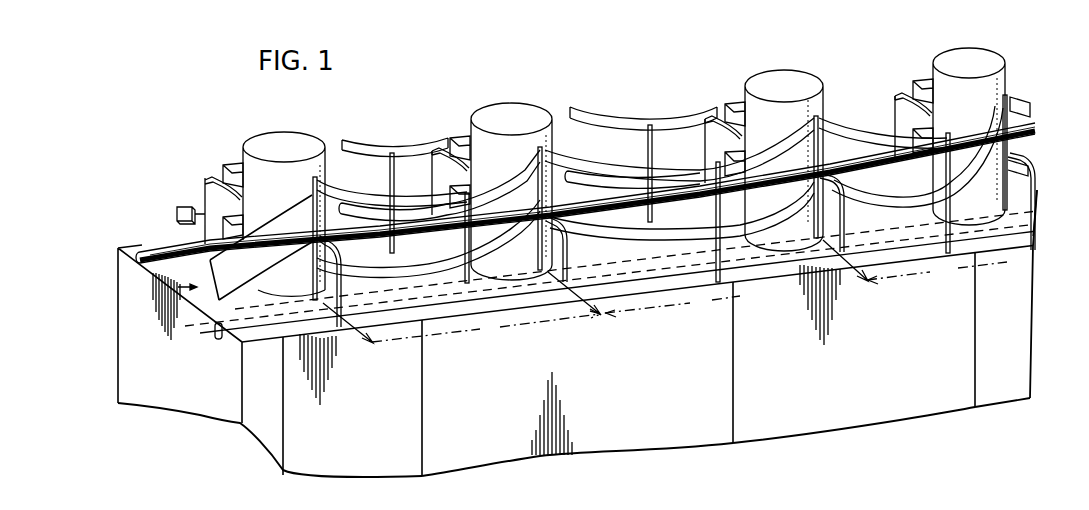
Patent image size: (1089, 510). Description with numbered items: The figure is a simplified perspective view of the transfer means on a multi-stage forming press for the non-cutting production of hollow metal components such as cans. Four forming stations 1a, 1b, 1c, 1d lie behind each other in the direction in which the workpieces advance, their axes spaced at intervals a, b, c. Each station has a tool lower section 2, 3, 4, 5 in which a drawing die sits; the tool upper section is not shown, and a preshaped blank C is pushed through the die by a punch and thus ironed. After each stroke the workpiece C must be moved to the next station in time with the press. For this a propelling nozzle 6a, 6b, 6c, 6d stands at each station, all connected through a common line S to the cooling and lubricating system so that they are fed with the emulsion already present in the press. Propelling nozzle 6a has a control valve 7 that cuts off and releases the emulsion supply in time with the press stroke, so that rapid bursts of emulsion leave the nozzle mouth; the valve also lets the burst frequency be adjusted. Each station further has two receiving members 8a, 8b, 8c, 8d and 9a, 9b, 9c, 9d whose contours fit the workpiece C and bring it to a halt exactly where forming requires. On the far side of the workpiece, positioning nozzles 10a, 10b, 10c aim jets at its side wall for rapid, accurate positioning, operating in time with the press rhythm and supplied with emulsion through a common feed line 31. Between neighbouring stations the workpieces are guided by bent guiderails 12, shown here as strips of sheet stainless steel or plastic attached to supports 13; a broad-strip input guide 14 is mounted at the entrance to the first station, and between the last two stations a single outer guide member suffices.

The forming station 1a is at (368, 387).
The forming station 1b is at (612, 374).
The forming station 1c is at (882, 351).
The forming station 1d is at (1022, 351).
The tool lower section 2 is at (286, 334).
The tool lower section 3 is at (671, 292).
The tool lower section 4 is at (918, 255).
The tool lower section 5 is at (1012, 246).
The propelling nozzle 6a is at (228, 192).
The propelling nozzle 6b is at (464, 146).
The propelling nozzle 6c is at (735, 124).
The propelling nozzle 6d is at (897, 98).
The control valve 7 is at (183, 206).
The receiving member 8a is at (230, 167).
The receiving member 8b is at (460, 137).
The receiving member 8c is at (730, 107).
The receiving member 8d is at (923, 82).
The receiving member 9a is at (228, 228).
The receiving member 9b is at (464, 197).
The receiving member 9c is at (742, 160).
The receiving member 9d is at (926, 137).
The positioning nozzle 10a is at (342, 290).
The positioning nozzle 10b is at (570, 255).
The positioning nozzle 10c is at (846, 222).
The bent guiderail 12 is at (376, 140).
The support 13 is at (312, 183).
The curved shield 14 is at (245, 280).
The common feed line 31 is at (233, 338).
The workpiece C is at (258, 137).
The common line S is at (168, 255).
The interval a is at (462, 323).
The interval b is at (644, 294).
The interval c is at (915, 262).